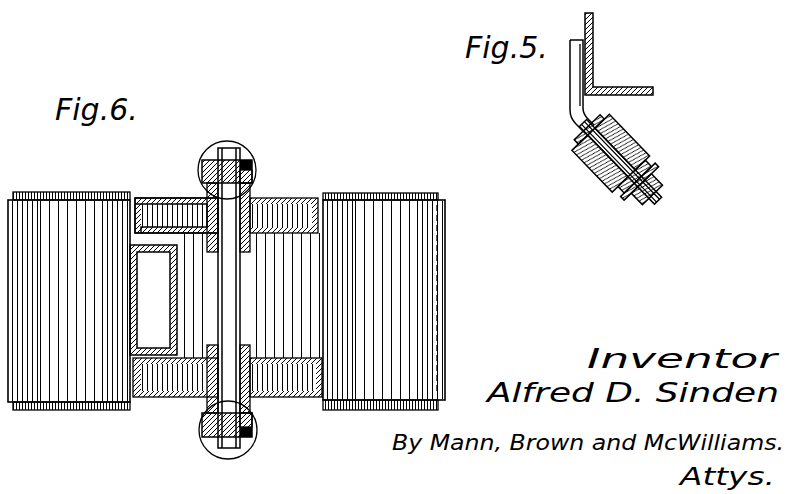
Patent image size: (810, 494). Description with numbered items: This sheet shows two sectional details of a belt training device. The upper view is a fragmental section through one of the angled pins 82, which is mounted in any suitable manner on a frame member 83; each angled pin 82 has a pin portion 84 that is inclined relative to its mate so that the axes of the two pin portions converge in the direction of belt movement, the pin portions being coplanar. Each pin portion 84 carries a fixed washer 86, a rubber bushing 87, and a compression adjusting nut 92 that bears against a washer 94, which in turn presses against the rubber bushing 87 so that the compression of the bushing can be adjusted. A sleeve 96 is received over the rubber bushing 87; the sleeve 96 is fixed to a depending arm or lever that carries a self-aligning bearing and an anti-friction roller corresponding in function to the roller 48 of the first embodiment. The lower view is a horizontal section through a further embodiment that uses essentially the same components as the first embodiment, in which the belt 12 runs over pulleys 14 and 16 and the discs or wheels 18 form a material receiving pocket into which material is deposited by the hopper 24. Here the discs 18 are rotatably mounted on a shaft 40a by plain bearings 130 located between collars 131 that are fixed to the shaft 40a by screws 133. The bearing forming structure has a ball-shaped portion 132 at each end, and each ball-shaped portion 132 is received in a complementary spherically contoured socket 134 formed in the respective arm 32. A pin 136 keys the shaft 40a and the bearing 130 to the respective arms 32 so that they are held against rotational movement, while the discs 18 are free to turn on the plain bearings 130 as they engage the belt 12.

In FIG. 6, the belt 12 is at (425, 270).
In FIG. 6, the pulley 14 is at (82, 406).
In FIG. 6, the pulley 16 is at (346, 409).
In FIG. 6, the discs or wheels 18 is at (173, 200).
In FIG. 6, the hopper 24 is at (172, 312).
In FIG. 6, the arms 32 is at (252, 188).
In FIG. 6, the shaft 40a is at (232, 285).
In FIG. 6, the roller 48 is at (205, 160).
In FIG. 6, the plain bearings 130 is at (200, 200).
In FIG. 6, the collars 131 is at (250, 210).
In FIG. 6, the ball-shaped portion 132 is at (215, 158).
In FIG. 6, the screws 133 is at (252, 200).
In FIG. 6, the spherically contoured socket 134 is at (238, 160).
In FIG. 6, the pin 136 is at (252, 170).
In FIG. 5, the angled pins 82 is at (572, 80).
In FIG. 5, the frame members 83 is at (594, 50).
In FIG. 5, the pin portion 84 is at (601, 186).
In FIG. 5, the fixed washer 86 is at (608, 128).
In FIG. 5, the rubber bushing 87 is at (630, 140).
In FIG. 5, the compression adjusting nut 92 is at (661, 192).
In FIG. 5, the washer 94 is at (656, 172).
In FIG. 5, the sleeve 96 is at (652, 158).